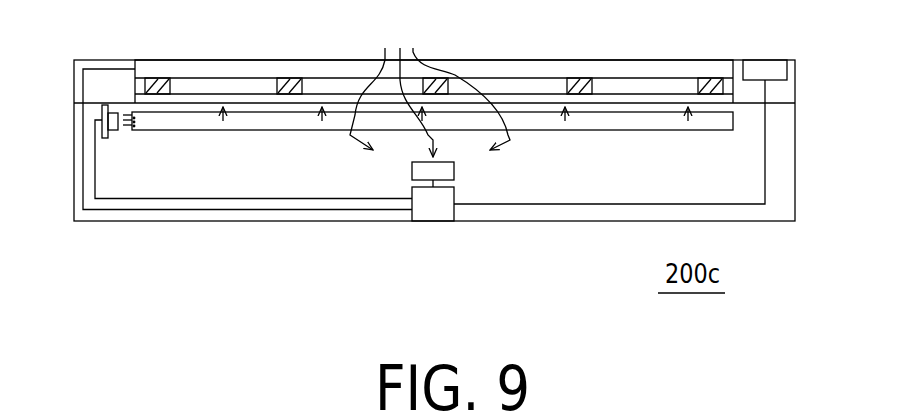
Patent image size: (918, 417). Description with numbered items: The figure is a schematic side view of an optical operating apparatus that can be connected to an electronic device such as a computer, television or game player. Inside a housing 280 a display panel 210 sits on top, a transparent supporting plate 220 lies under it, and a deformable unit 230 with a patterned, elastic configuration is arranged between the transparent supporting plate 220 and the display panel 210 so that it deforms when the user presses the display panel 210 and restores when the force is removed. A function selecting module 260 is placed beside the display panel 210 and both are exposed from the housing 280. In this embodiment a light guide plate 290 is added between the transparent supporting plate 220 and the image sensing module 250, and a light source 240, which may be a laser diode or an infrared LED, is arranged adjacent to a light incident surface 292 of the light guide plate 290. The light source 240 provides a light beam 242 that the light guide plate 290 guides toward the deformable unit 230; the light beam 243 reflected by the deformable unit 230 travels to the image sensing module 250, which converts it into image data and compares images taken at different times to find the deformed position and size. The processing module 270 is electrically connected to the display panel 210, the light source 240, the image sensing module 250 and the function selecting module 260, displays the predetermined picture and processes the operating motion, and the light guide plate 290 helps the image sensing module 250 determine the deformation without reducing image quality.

The display panel 210 is at (672, 65).
The transparent supporting plate 220 is at (537, 97).
The deformable unit 230 is at (296, 79).
The light source 240 is at (102, 112).
The light beam 242 is at (131, 112).
The light beam 243 is at (430, 86).
The image sensing module 250 is at (412, 172).
The function selecting module 260 is at (773, 65).
The processing module 270 is at (441, 218).
The housing 280 is at (795, 187).
The light guide plate 290 is at (733, 121).
The light incident surface 292 is at (134, 124).